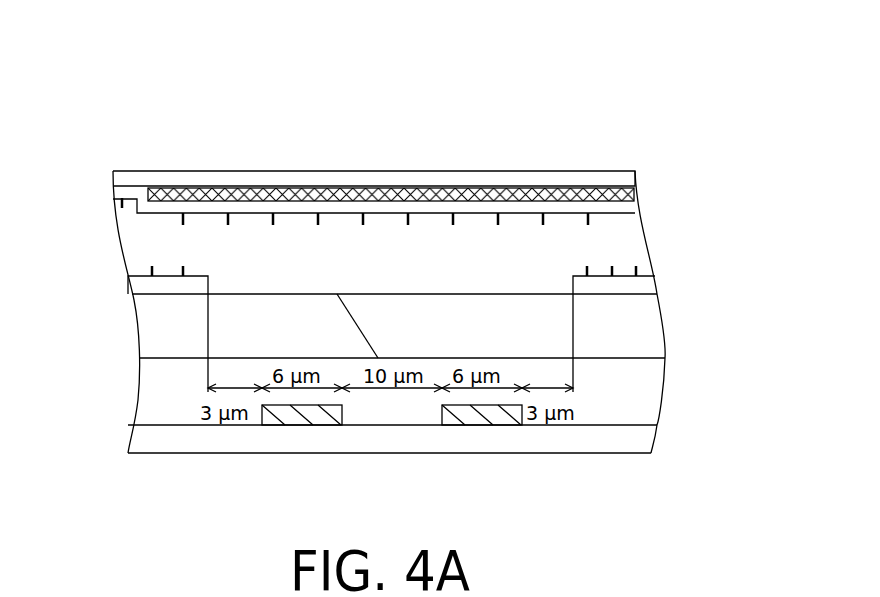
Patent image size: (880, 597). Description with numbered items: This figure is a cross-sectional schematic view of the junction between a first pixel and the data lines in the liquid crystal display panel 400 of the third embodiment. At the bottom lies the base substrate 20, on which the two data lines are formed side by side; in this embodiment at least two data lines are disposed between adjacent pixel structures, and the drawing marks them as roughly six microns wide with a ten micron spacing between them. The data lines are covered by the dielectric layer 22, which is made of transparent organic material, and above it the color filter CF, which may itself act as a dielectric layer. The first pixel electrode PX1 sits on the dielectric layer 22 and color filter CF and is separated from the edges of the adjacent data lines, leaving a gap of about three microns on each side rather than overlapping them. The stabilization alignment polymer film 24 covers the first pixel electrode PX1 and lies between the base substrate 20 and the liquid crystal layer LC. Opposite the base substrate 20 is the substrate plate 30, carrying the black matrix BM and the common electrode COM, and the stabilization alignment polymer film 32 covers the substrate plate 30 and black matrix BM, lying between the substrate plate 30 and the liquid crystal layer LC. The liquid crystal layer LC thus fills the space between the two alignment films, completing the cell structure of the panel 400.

The liquid crystal display panel 400 is at (696, 92).
The substrate plate 30 is at (633, 180).
The black matrix BM is at (382, 195).
The common electrode COM is at (633, 211).
The stabilization alignment polymer film 32 is at (122, 200).
The liquid crystal layer LC is at (628, 245).
The stabilization alignment polymer film 24 is at (153, 264).
The first pixel electrode PX1 is at (133, 283).
The color filter CF is at (150, 333).
The dielectric layer 22 is at (657, 397).
The base substrate 20 is at (648, 443).